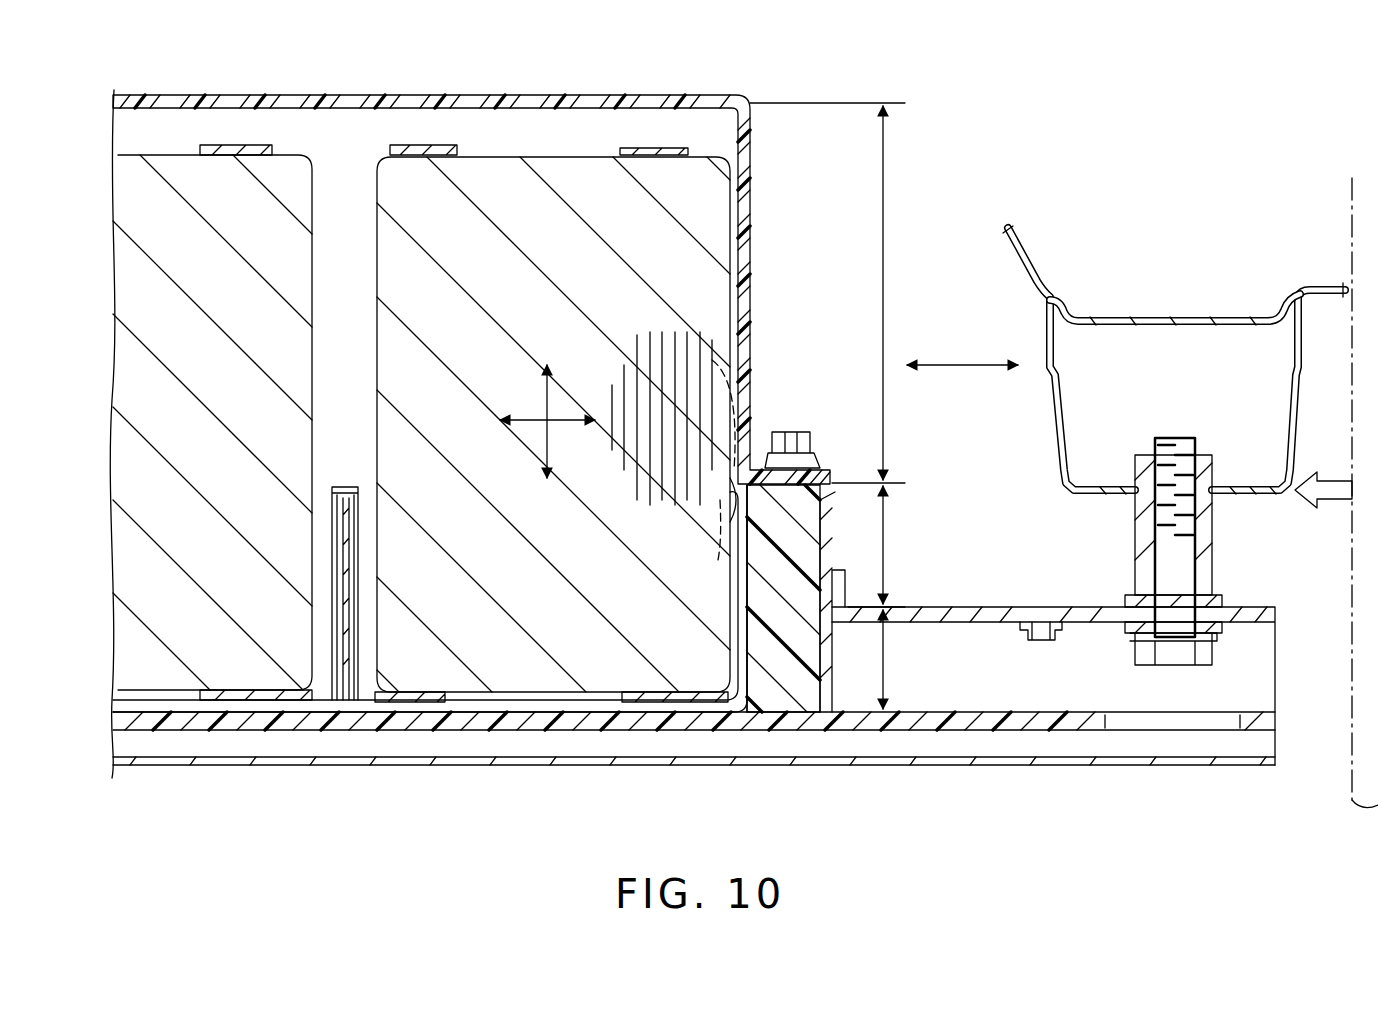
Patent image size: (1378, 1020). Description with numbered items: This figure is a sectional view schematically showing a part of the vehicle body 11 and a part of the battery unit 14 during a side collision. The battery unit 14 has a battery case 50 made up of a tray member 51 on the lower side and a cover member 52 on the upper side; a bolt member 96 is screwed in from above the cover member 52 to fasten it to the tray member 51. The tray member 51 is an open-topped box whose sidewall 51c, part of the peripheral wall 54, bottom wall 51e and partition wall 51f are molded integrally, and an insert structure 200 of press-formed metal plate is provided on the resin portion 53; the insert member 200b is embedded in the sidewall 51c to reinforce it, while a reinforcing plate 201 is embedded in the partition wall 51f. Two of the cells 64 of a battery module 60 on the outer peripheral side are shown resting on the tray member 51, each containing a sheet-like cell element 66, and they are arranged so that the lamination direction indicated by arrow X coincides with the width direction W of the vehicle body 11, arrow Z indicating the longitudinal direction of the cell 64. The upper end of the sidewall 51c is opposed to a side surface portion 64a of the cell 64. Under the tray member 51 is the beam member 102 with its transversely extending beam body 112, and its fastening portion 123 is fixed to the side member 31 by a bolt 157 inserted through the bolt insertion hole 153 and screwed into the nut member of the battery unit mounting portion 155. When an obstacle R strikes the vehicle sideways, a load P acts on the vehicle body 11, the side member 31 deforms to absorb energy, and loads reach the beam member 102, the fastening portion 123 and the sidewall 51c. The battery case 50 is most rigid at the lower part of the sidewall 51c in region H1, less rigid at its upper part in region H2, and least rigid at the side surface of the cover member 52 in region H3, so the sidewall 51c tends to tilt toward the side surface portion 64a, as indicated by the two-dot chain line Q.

The battery unit 14 is at (196, 77).
The battery module 60 is at (290, 138).
The cover member 52 is at (578, 94).
The battery case 50 is at (754, 190).
The cell 64 is at (688, 262).
The side surface portion 64a is at (735, 508).
The cell element 66 is at (700, 358).
The bolt member 96 is at (791, 430).
The two-dot chain line Q is at (722, 530).
The arrow Z is at (547, 402).
The arrow X is at (531, 421).
The tray member 51 is at (500, 718).
The partition wall 51f is at (333, 522).
The reinforcing plate 201 is at (345, 578).
The resin portion 53 is at (343, 640).
The sidewall 51c is at (760, 604).
The bottom wall 51e is at (572, 712).
The insert structure 200 is at (752, 682).
The insert member 200b is at (738, 645).
The peripheral wall 54 is at (804, 657).
The beam body 112 is at (320, 765).
The beam member 102 is at (645, 766).
The lower part region of the sidewall H1 is at (884, 660).
The upper part region of the sidewall H2 is at (884, 538).
The side surface region of the cover member H3 is at (884, 270).
The width direction W is at (962, 360).
The vehicle body 11 is at (1158, 240).
The side member 31 is at (1054, 440).
The battery unit mounting portion 155 is at (1215, 580).
The bolt insertion hole 153 is at (1222, 624).
The bolt 157 is at (1173, 615).
The fastening portion 123 is at (1035, 620).
The load P is at (1323, 508).
The obstacle R is at (1352, 660).